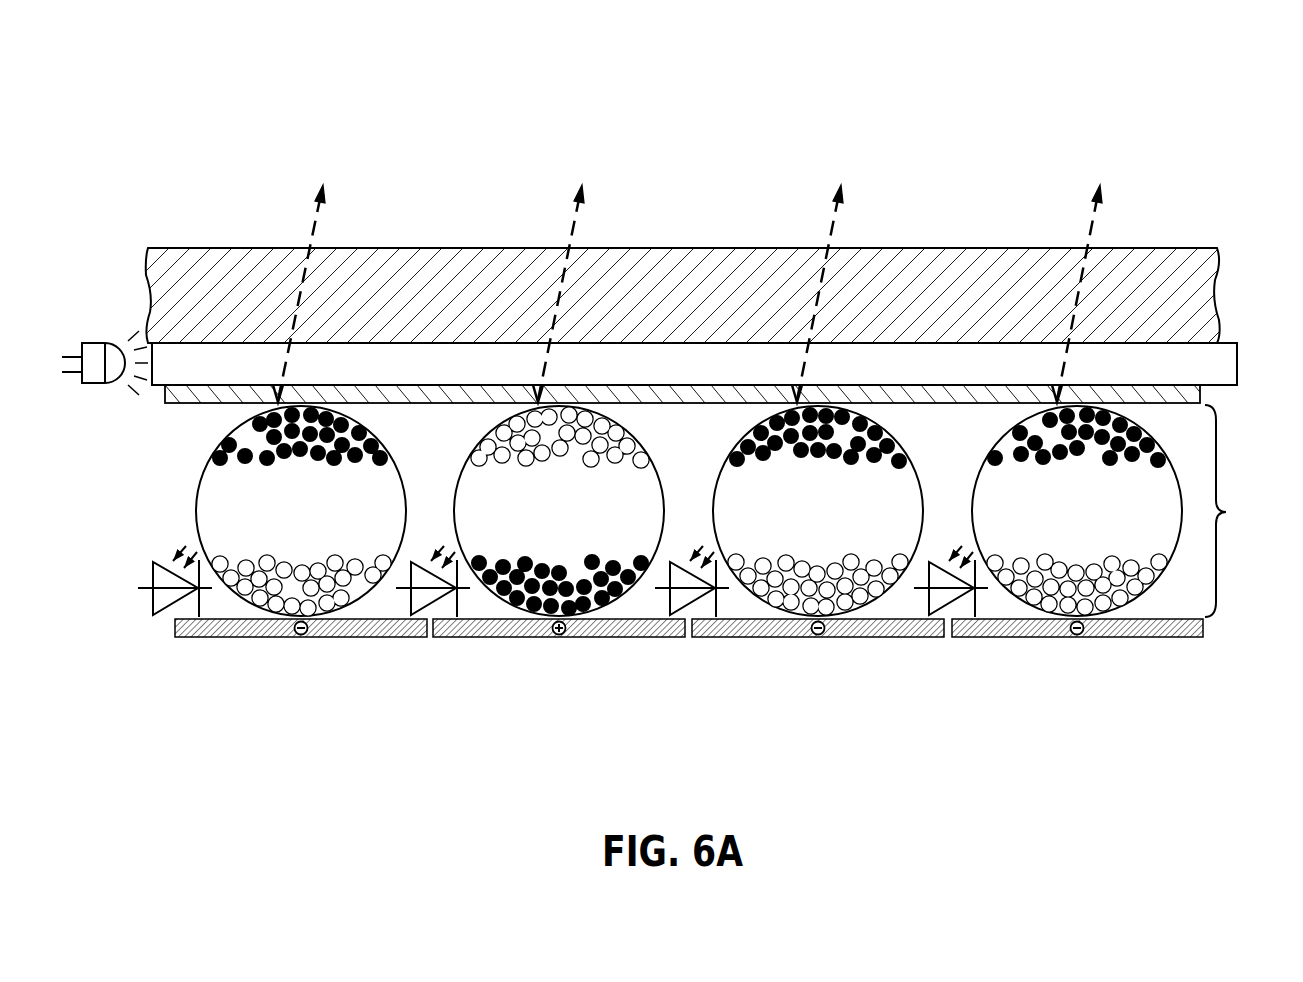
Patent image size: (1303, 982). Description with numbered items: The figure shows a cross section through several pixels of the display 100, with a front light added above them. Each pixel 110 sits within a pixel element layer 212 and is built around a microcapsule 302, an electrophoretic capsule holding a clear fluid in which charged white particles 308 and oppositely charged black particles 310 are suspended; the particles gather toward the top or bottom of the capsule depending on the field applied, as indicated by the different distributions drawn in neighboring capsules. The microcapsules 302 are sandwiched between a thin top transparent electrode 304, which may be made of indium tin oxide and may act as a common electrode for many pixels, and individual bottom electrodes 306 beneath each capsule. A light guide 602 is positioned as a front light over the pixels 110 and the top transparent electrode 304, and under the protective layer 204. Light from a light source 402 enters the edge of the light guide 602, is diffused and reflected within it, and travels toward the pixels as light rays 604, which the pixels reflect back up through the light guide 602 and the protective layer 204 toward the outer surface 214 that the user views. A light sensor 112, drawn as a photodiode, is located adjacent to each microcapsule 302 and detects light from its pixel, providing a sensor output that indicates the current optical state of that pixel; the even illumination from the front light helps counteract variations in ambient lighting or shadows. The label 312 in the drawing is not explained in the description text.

The display 100 is at (112, 95).
The pixel 110 is at (655, 511).
The light sensor 112 is at (153, 599).
The protective layer 204 is at (738, 247).
The pixel element layer 212 is at (1226, 512).
The outer surface 214 is at (650, 208).
The microcapsule 302 is at (1094, 517).
The top transparent electrode 304 is at (163, 392).
The bottom electrode 306 is at (243, 640).
The white particles 308 is at (307, 562).
The black particles 310 is at (309, 456).
The colored particles 312 is at (1085, 456).
The light source 402 is at (100, 386).
The light guide 602 is at (694, 364).
The light rays 604 is at (307, 220).